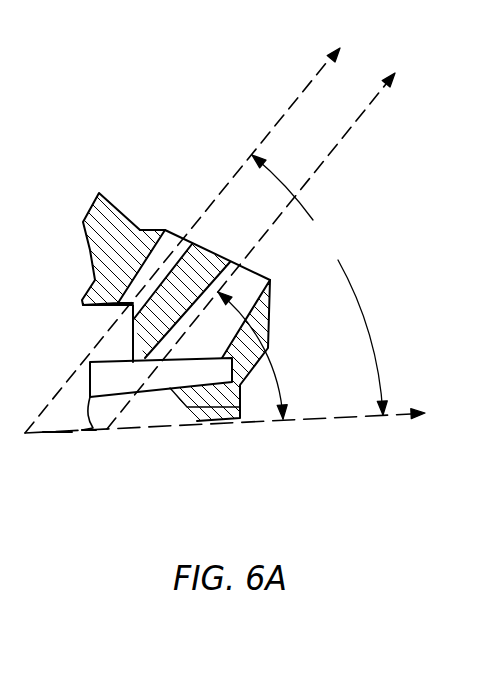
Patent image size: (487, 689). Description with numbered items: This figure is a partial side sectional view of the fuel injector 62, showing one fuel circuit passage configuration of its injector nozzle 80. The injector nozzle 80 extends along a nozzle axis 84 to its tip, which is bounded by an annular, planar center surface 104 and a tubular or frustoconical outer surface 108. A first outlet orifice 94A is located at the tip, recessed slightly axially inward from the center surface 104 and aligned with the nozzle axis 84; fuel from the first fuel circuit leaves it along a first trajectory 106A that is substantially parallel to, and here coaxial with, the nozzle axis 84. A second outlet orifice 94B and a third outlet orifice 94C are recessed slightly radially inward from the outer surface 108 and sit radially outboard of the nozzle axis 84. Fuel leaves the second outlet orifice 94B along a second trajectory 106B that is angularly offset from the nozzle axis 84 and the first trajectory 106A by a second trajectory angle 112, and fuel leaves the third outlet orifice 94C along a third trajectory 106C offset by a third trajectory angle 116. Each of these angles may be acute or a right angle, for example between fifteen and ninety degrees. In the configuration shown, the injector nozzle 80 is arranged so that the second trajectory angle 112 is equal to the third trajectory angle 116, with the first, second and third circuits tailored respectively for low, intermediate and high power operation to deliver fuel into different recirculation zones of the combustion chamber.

The fuel injector 62 is at (100, 72).
The injector nozzle 80 is at (243, 340).
The nozzle axis 84 is at (45, 433).
The first outlet orifice 94A is at (262, 420).
The second outlet orifice 94B is at (250, 263).
The third outlet orifice 94C is at (182, 238).
The center surface 104 is at (271, 325).
The first trajectory 106A is at (349, 421).
The second trajectory 106B is at (340, 145).
The third trajectory 106C is at (280, 118).
The outer surface 108 is at (221, 255).
The second trajectory angle 112 is at (280, 374).
The third trajectory angle 116 is at (319, 285).